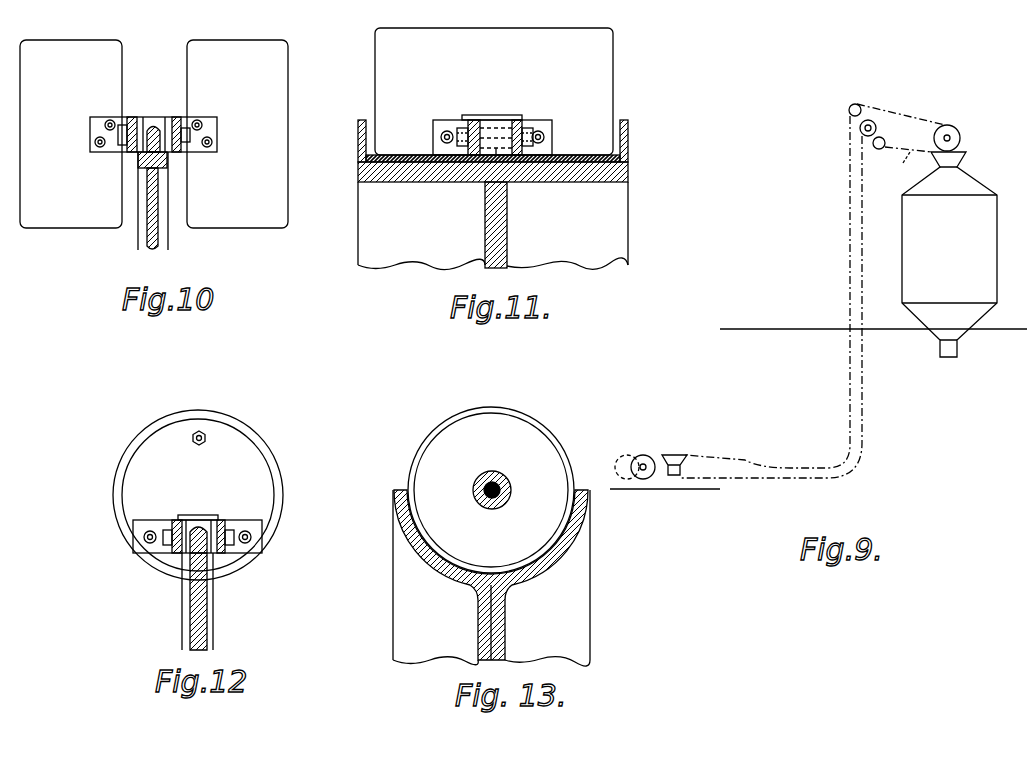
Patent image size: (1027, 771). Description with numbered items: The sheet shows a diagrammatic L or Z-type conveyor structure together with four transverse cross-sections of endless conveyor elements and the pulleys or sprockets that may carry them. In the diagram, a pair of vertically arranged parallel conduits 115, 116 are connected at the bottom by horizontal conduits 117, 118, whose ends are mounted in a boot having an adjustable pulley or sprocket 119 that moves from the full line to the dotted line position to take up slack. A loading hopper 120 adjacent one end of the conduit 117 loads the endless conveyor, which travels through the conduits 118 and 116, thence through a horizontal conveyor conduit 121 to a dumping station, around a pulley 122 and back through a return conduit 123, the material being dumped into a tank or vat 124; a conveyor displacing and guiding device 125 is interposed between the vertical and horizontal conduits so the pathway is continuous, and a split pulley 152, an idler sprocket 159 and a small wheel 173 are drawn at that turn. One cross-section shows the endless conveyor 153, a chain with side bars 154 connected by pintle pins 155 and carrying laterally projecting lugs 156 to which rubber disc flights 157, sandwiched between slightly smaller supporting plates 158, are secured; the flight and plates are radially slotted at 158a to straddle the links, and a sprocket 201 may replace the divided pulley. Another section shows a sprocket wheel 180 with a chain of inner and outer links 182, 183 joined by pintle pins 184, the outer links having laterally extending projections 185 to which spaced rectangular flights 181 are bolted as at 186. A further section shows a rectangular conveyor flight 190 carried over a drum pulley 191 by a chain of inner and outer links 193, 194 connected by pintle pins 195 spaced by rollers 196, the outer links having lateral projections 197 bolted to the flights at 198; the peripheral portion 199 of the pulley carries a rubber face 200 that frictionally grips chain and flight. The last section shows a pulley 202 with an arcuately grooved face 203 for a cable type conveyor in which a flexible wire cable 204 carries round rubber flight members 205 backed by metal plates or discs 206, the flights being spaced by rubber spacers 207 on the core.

In FIG. 9, the vertically arranged conduit 115 is at (848, 392).
In FIG. 9, the vertically arranged conduit 116 is at (863, 393).
In FIG. 9, the horizontal conduit 117 is at (748, 458).
In FIG. 9, the horizontal conduit 118 is at (725, 479).
In FIG. 9, the adjustable pulley or sprocket 119 is at (645, 455).
In FIG. 9, the loading hopper 120 is at (672, 455).
In FIG. 9, the horizontal conveyor conduit 121 is at (902, 162).
In FIG. 9, the pulley 122 is at (958, 128).
In FIG. 9, the return conduit 123 is at (892, 112).
In FIG. 9, the tank or vat 124 is at (949, 254).
In FIG. 9, the conveyor displacing and guiding device 125 is at (857, 128).
In FIG. 9, the split pulley 152 is at (877, 128).
In FIG. 12, the endless conveyor 153 is at (238, 524).
In FIG. 12, the side bars 154 is at (176, 519).
In FIG. 12, the pintle pins 155 is at (132, 526).
In FIG. 12, the laterally projecting lugs 156 is at (140, 533).
In FIG. 12, the rubber disc 157 is at (262, 432).
In FIG. 12, the supporting plates 158 is at (250, 460).
In FIG. 12, the radial slot 158a is at (200, 515).
In FIG. 9, the idler sprocket 159 is at (886, 143).
In FIG. 9, the idler pulley 173 is at (852, 104).
In FIG. 10, the sprocket wheel 180 is at (150, 241).
In FIG. 10, the rectangular conveyor flights 181 is at (82, 44).
In FIG. 10, the inner links 182 is at (168, 117).
In FIG. 10, the outer links 183 is at (130, 153).
In FIG. 10, the pintle pins 184 is at (120, 135).
In FIG. 10, the laterally extending projections 185 is at (207, 119).
In FIG. 10, the bolts 186 is at (110, 119).
In FIG. 11, the conveyor flight 190 is at (600, 52).
In FIG. 11, the drum pulley 191 is at (500, 231).
In FIG. 11, the inner links 193 is at (484, 118).
In FIG. 11, the outer links 194 is at (473, 119).
In FIG. 11, the pintle pins 195 is at (462, 126).
In FIG. 11, the rollers 196 is at (490, 196).
In FIG. 11, the lateral projections 197 is at (446, 122).
In FIG. 11, the bolts 198 is at (441, 137).
In FIG. 11, the peripheral portion 199 is at (430, 176).
In FIG. 11, the rubber face 200 is at (368, 159).
In FIG. 12, the sprocket 201 is at (200, 618).
In FIG. 13, the pulley 202 is at (492, 614).
In FIG. 13, the arcuately grooved face 203 is at (588, 542).
In FIG. 13, the flexible wire cable 204 is at (511, 490).
In FIG. 13, the round flight members 205 is at (488, 407).
In FIG. 13, the metal plates or discs 206 is at (515, 435).
In FIG. 13, the rubber spacers 207 is at (474, 490).